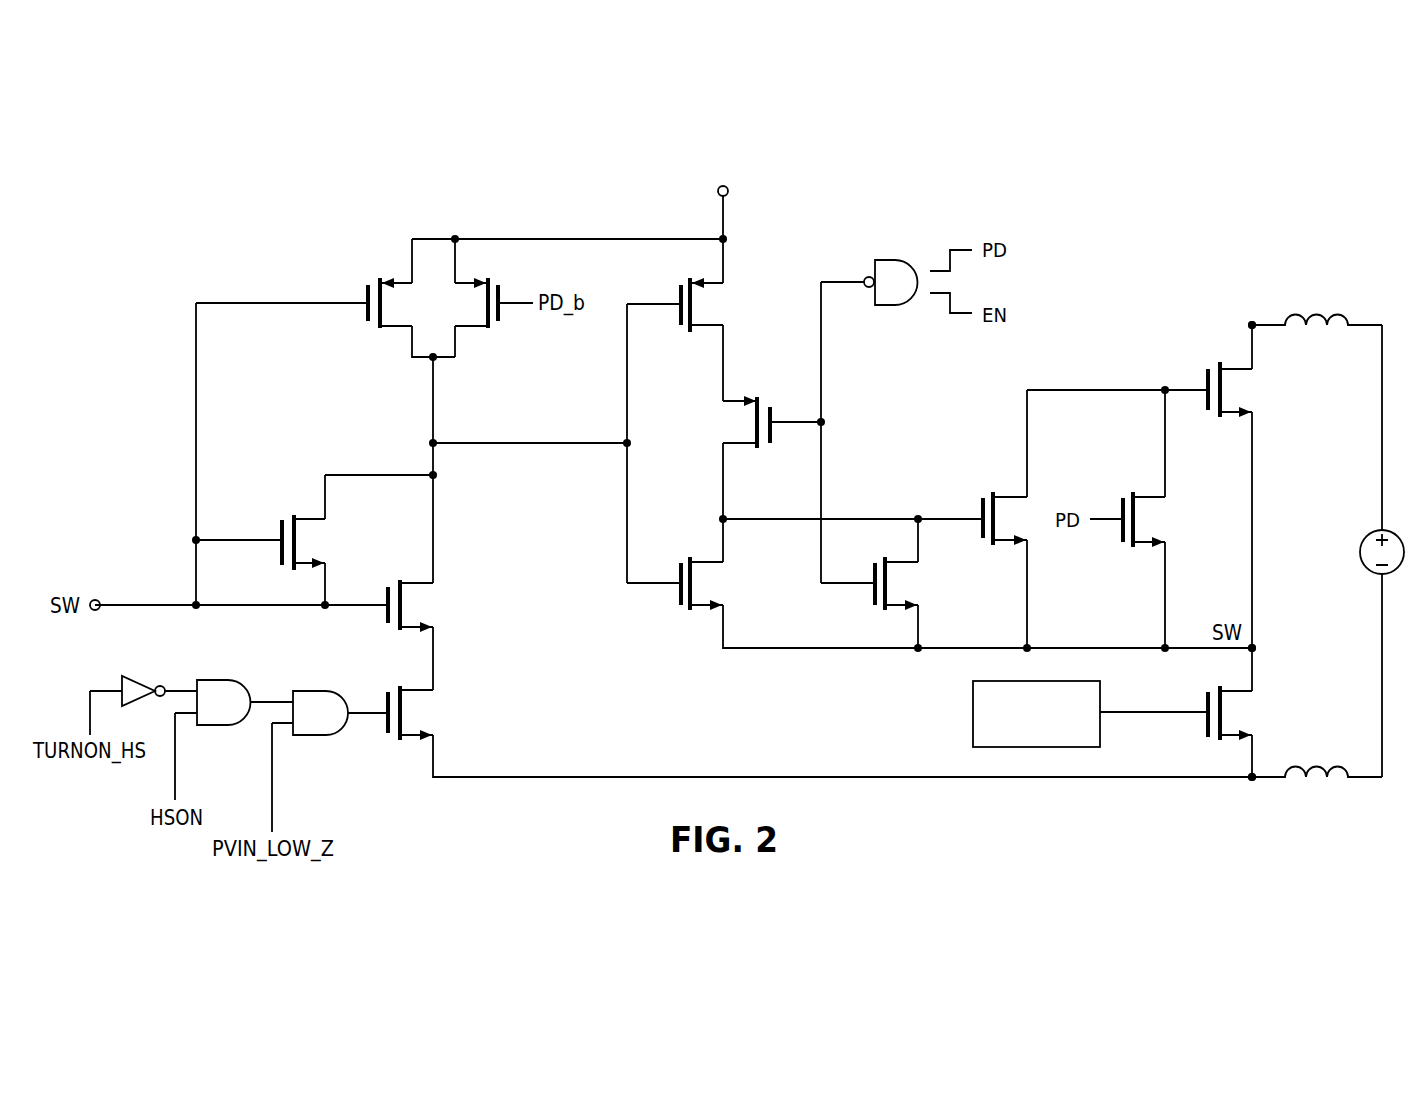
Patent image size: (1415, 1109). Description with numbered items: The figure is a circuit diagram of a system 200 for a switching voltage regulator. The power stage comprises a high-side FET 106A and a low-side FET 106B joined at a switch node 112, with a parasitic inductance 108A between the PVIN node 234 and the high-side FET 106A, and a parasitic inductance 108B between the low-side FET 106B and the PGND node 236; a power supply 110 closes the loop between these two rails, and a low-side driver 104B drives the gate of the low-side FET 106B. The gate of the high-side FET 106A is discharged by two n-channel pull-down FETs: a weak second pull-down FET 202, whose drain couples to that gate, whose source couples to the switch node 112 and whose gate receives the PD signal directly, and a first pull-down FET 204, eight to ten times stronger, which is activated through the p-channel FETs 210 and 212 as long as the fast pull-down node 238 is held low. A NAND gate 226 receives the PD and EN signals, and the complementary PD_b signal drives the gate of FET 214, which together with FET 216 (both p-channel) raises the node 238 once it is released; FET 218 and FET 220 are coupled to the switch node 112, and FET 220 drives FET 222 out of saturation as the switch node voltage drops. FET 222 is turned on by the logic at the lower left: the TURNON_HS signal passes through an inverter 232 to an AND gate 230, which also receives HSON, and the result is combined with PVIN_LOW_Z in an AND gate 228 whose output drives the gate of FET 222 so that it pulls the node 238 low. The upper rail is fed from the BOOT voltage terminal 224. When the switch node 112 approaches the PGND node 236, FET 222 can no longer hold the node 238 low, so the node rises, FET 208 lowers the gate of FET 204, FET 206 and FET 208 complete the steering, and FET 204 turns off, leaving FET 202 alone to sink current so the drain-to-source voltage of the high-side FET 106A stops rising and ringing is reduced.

The system 200 is at (1172, 191).
The pull-down FET 202 is at (1118, 507).
The pull-down FET 204 is at (980, 510).
The FET 206 is at (873, 593).
The FET 208 is at (678, 593).
The FET 210 is at (773, 407).
The FET 212 is at (678, 290).
The FET 214 is at (502, 290).
The FET 216 is at (367, 290).
The FET 218 is at (280, 553).
The FET 220 is at (387, 618).
The FET 222 is at (387, 730).
The BOOT voltage terminal 224 is at (718, 190).
The NAND gate 226 is at (905, 258).
The AND gate 228 is at (322, 735).
The AND gate 230 is at (223, 727).
The inverter 232 is at (145, 677).
The node 234 is at (1250, 323).
The node 236 is at (1255, 787).
The node 238 is at (432, 442).
The low-side driver 104B is at (972, 723).
The high-side FET 106A is at (1205, 377).
The low-side FET 106B is at (1205, 727).
The parasitic inductance 108A is at (1325, 307).
The parasitic inductance 108B is at (1325, 758).
The power supply 110 is at (1358, 552).
The switch node 112 is at (95, 613).